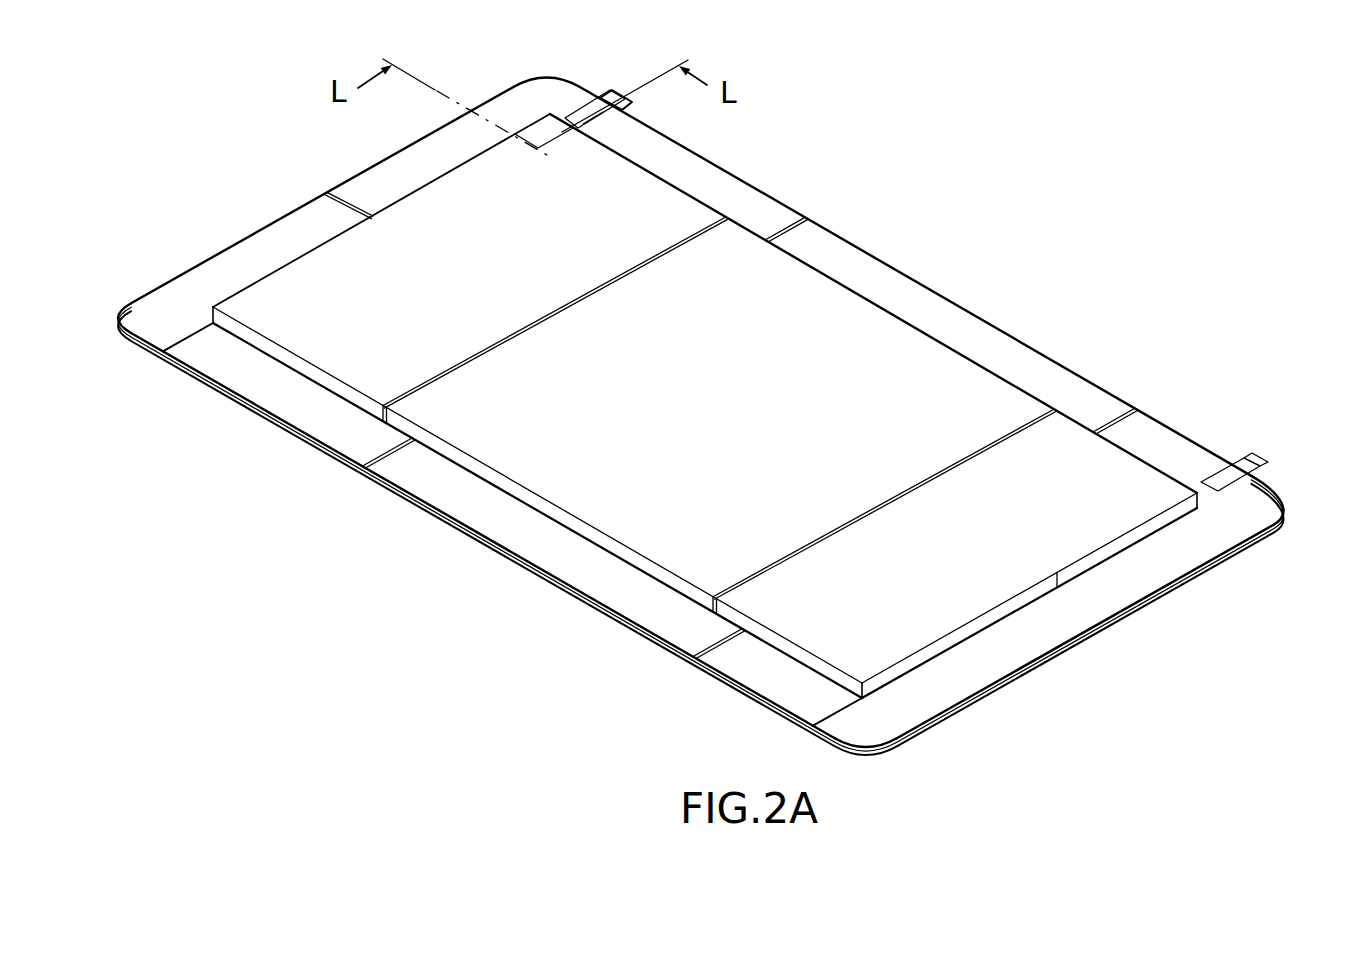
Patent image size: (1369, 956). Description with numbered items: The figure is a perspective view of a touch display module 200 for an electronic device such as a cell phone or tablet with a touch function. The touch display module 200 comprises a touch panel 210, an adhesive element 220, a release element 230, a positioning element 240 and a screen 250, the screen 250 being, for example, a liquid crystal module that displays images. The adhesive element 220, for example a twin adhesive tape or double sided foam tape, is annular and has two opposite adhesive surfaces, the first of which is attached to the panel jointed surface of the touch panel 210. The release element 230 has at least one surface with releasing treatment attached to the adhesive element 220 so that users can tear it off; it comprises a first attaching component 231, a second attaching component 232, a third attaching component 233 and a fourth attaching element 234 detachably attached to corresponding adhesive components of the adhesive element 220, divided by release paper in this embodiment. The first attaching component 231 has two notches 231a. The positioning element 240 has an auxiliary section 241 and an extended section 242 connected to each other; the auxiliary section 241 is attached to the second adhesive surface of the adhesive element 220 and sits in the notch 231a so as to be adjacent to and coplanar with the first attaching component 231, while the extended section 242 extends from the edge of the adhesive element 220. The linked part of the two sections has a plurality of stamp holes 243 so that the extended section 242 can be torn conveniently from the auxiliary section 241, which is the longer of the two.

The touch display module 200 is at (122, 66).
The touch panel 210 is at (813, 734).
The adhesive element 220 is at (1063, 657).
The release element 230 is at (1134, 614).
The first attaching component 231 is at (840, 253).
The notch 231a is at (598, 128).
The second attaching component 232 is at (177, 307).
The third attaching component 233 is at (516, 534).
The attaching element 234 is at (1152, 574).
The positioning element 240 is at (914, 258).
The auxiliary section 241 is at (612, 118).
The extended section 242 is at (628, 90).
The stamp holes 243 is at (614, 99).
The screen 250 is at (967, 380).